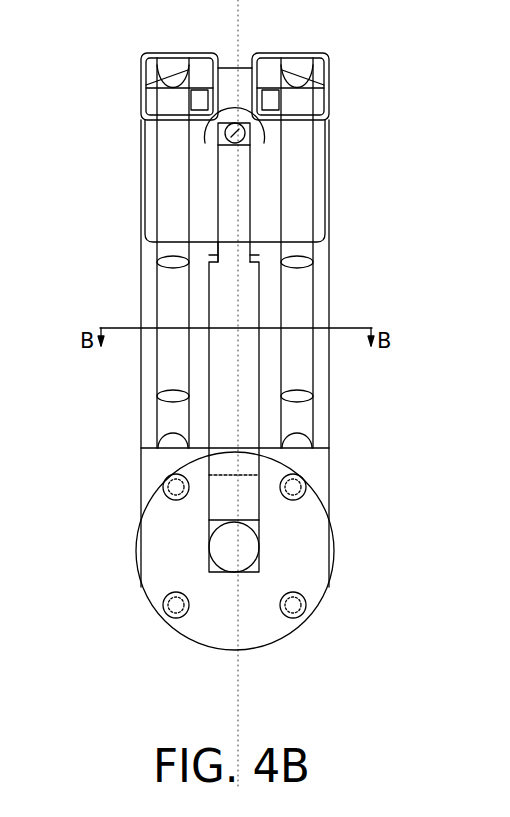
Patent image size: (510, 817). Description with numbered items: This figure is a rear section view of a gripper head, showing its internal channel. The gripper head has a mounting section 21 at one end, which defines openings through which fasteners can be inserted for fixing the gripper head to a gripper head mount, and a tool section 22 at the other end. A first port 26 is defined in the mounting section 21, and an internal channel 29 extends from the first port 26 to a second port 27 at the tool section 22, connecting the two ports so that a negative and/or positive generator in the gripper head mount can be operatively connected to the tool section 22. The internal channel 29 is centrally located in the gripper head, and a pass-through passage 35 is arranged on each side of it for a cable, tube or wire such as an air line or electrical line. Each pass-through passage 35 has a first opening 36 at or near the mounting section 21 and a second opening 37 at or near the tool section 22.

The mounting section 21 is at (337, 565).
The tool section 22 is at (218, 38).
The first port 26 is at (245, 556).
The second port 27 is at (230, 138).
The internal channel 29 is at (237, 417).
The pass-through passage 35 is at (300, 198).
The first opening 36 is at (170, 440).
The second opening 37 is at (148, 90).